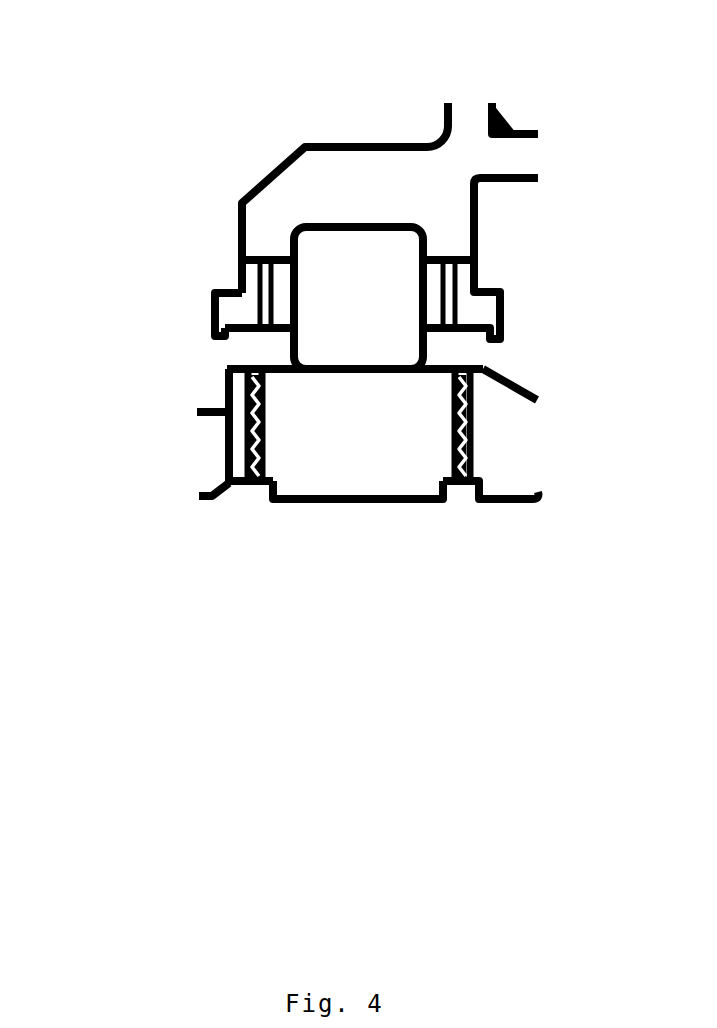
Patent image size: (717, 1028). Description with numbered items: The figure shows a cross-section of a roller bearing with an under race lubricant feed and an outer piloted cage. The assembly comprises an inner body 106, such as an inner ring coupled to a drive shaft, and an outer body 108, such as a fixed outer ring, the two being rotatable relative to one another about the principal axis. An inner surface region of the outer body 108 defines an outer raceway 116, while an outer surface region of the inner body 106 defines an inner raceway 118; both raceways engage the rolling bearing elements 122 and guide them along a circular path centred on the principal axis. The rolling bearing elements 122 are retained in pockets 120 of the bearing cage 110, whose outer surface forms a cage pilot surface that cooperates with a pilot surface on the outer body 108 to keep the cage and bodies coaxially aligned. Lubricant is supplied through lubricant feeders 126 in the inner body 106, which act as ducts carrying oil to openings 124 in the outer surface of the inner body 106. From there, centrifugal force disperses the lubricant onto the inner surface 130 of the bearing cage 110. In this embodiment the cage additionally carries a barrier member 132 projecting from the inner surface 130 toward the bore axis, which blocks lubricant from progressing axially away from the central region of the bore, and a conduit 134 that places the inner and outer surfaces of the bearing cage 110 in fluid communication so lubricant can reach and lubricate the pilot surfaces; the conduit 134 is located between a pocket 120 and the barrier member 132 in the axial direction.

The inner body 106 is at (510, 442).
The outer body 108 is at (272, 196).
The bearing cage 110 is at (237, 310).
The outer raceway 116 is at (333, 218).
The inner raceway 118 is at (330, 377).
The pockets 120 is at (238, 275).
The rolling bearing elements 122 is at (387, 248).
The openings 124 is at (240, 383).
The lubricant feeders 126 is at (453, 503).
The inner surface 130 is at (243, 338).
The barrier member 132 is at (512, 347).
The conduit 134 is at (462, 283).